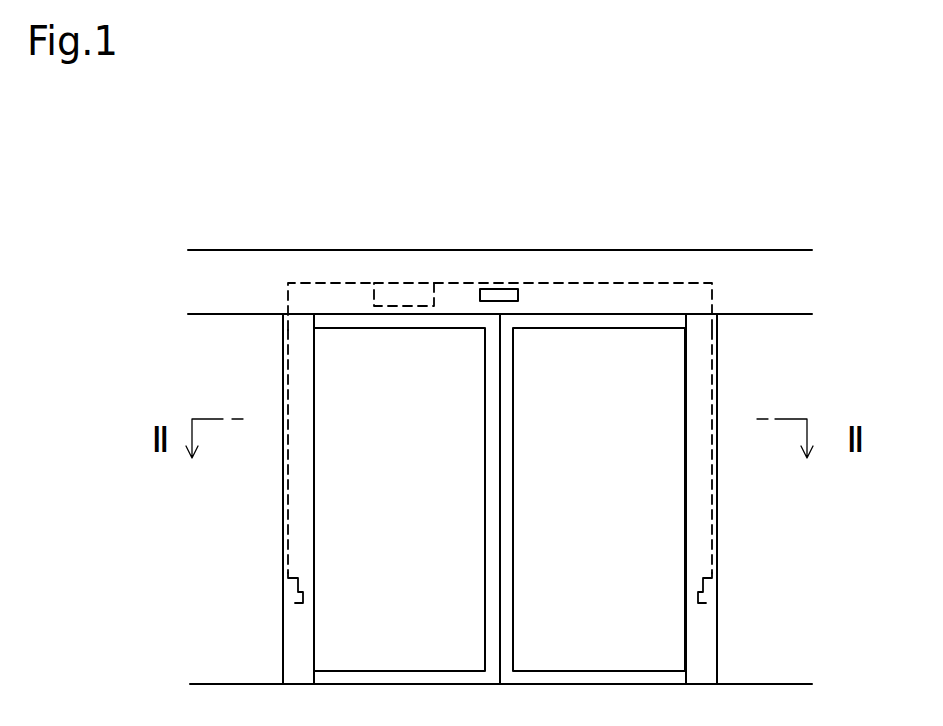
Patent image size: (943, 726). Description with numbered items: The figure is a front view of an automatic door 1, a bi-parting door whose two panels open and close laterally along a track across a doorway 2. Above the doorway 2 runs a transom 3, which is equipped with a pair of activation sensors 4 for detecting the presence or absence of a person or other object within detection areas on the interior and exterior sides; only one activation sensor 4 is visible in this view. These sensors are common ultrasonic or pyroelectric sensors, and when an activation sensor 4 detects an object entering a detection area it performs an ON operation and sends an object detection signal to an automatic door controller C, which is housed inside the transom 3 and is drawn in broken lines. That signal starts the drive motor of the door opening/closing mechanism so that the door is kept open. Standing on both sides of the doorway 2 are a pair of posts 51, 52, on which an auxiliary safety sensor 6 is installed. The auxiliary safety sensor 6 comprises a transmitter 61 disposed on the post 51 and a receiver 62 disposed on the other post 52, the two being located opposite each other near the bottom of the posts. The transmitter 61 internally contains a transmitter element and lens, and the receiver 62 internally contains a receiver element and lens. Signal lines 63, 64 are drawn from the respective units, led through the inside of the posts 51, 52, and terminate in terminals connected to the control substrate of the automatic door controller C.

The automatic door 1 is at (622, 343).
The doorway 2 is at (686, 403).
The transom 3 is at (278, 262).
The activation sensor 4 is at (497, 289).
The automatic door controller C is at (406, 282).
The auxiliary safety sensor 6 is at (250, 490).
The post 51 is at (717, 365).
The post 52 is at (283, 365).
The transmitter 61 is at (686, 595).
The receiver 62 is at (312, 598).
The signal line 63 is at (718, 532).
The signal line 64 is at (288, 554).